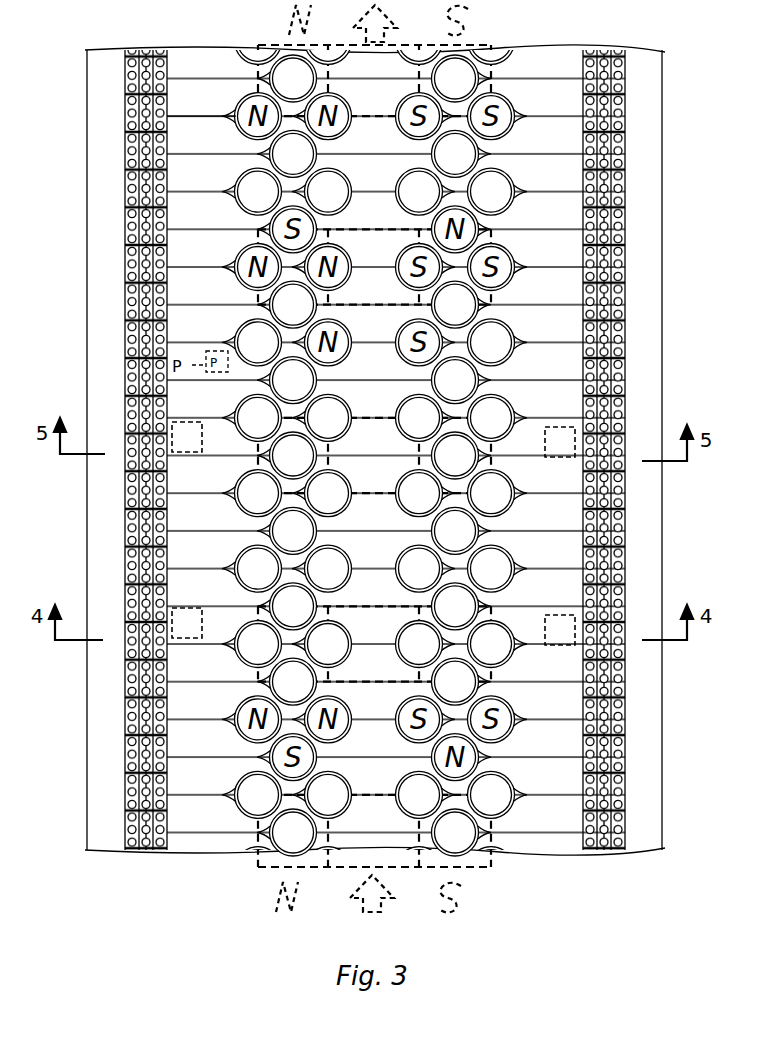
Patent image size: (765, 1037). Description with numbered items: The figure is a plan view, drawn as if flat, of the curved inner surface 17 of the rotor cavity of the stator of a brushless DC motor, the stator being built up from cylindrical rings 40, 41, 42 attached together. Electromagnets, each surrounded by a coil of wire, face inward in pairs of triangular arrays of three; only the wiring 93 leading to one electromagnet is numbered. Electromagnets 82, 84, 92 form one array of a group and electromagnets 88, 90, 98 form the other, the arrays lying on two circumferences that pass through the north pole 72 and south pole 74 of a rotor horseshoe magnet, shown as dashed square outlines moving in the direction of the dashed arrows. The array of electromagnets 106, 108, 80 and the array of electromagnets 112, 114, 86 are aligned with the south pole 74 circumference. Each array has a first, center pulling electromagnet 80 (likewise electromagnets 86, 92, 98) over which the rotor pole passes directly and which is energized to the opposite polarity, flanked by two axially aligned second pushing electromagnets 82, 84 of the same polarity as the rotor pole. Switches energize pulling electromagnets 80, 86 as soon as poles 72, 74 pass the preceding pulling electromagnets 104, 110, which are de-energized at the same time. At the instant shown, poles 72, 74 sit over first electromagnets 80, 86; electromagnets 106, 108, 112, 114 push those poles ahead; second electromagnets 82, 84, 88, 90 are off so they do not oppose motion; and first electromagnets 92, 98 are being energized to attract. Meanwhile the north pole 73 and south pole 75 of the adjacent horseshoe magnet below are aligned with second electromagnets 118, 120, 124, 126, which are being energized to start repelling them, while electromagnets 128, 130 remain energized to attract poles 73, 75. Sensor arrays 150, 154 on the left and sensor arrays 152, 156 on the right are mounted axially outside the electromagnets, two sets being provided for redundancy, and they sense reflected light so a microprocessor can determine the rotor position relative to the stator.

The inner surface 17 is at (672, 172).
The cylindrical ring 40 is at (108, 740).
The cylindrical ring 41 is at (555, 776).
The cylindrical ring 42 is at (640, 740).
The north pole 72 is at (255, 460).
The north pole 73 is at (250, 632).
The south pole 74 is at (497, 462).
The south pole 75 is at (516, 650).
The first, center electromagnet 80 is at (293, 455).
The second electromagnet 82 is at (258, 412).
The second electromagnet 84 is at (262, 335).
The first, center electromagnet 86 is at (455, 455).
The second electromagnet 88 is at (490, 345).
The second electromagnet 90 is at (491, 415).
The first, center electromagnet 92 is at (293, 382).
The wiring 93 is at (235, 118).
The first, center electromagnet 98 is at (458, 380).
The preceding pulling electromagnet 104 is at (290, 530).
The electromagnet 106 is at (236, 494).
The electromagnet 108 is at (346, 502).
The preceding pulling electromagnet 110 is at (462, 530).
The electromagnet 112 is at (408, 488).
The electromagnet 114 is at (515, 494).
The second electromagnet 118 is at (248, 652).
The second electromagnet 120 is at (338, 626).
The second electromagnet 124 is at (412, 658).
The second electromagnet 126 is at (515, 652).
The electromagnet 128 is at (272, 600).
The electromagnet 130 is at (470, 603).
The sensor array 150 is at (128, 445).
The sensor array 152 is at (622, 455).
The sensor array 154 is at (128, 648).
The sensor array 156 is at (622, 648).